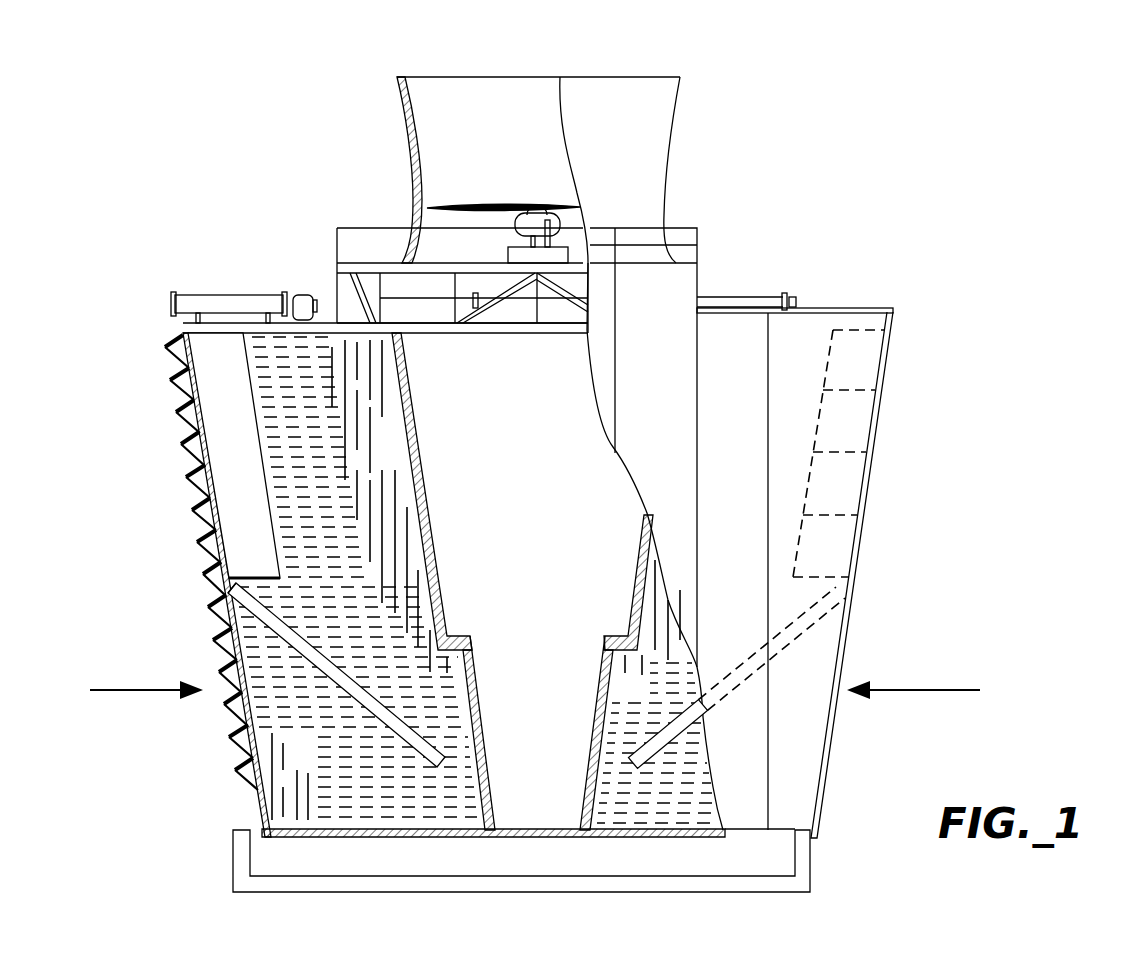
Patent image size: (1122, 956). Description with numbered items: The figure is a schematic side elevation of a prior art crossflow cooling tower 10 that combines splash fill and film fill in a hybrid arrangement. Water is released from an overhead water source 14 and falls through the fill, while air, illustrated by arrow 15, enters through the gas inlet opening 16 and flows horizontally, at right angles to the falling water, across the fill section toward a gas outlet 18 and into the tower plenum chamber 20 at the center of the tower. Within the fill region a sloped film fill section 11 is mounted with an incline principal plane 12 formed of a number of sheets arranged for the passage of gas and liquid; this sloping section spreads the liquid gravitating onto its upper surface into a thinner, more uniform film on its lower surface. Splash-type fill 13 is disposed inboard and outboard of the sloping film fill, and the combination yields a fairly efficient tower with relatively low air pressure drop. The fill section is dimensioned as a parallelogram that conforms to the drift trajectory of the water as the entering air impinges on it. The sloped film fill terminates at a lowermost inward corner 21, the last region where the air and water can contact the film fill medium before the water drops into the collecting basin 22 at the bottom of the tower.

The cooling tower 10 is at (772, 190).
The sloped film fill section 11 is at (263, 657).
The incline principal plane 12 is at (272, 613).
The splash-type fill 13 is at (282, 410).
The overhead water source 14 is at (247, 293).
The air flow arrow 15 is at (143, 690).
The gas inlet opening 16 is at (184, 568).
The gas outlet 18 is at (422, 427).
The tower plenum chamber 20 is at (571, 588).
The lowermost inward corner 21 is at (448, 732).
The collecting basin 22 is at (597, 891).